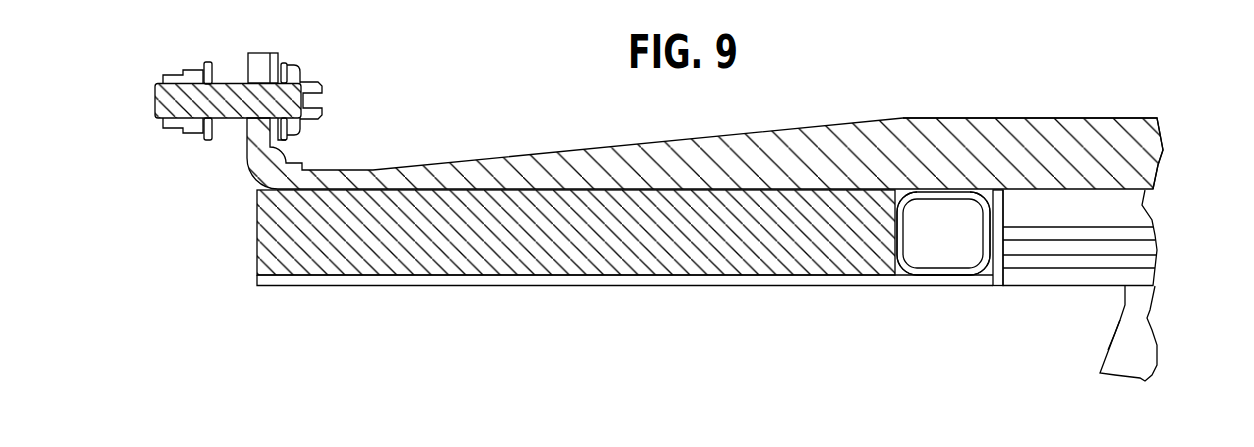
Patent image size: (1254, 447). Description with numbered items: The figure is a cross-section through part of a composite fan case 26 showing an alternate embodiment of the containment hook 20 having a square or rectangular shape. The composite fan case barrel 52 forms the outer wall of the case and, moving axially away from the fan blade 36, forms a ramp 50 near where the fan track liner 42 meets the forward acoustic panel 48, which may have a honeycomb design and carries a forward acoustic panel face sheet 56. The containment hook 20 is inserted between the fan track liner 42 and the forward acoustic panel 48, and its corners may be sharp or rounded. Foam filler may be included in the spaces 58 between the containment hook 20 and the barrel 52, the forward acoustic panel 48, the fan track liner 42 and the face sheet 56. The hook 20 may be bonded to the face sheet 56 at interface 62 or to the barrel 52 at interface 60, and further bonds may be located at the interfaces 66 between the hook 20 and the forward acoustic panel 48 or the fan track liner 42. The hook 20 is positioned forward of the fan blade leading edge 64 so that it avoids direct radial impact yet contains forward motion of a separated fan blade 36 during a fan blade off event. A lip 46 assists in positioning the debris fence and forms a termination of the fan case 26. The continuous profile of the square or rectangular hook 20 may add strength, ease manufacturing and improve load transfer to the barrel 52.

The containment hook 20 is at (928, 267).
The fan case 26 is at (205, 307).
The fan blade 36 is at (1143, 354).
The fan track liner 42 is at (1088, 247).
The lip 46 is at (272, 54).
The forward acoustic panel 48 is at (504, 262).
The ramp 50 is at (508, 157).
The fan case barrel 52 is at (1018, 128).
The forward acoustic panel face sheet 56 is at (648, 284).
The spaces 58 is at (912, 191).
The interface 60 is at (960, 232).
The interface 62 is at (965, 278).
The fan blade leading edge 64 is at (1117, 336).
The interfaces 66 is at (893, 228).